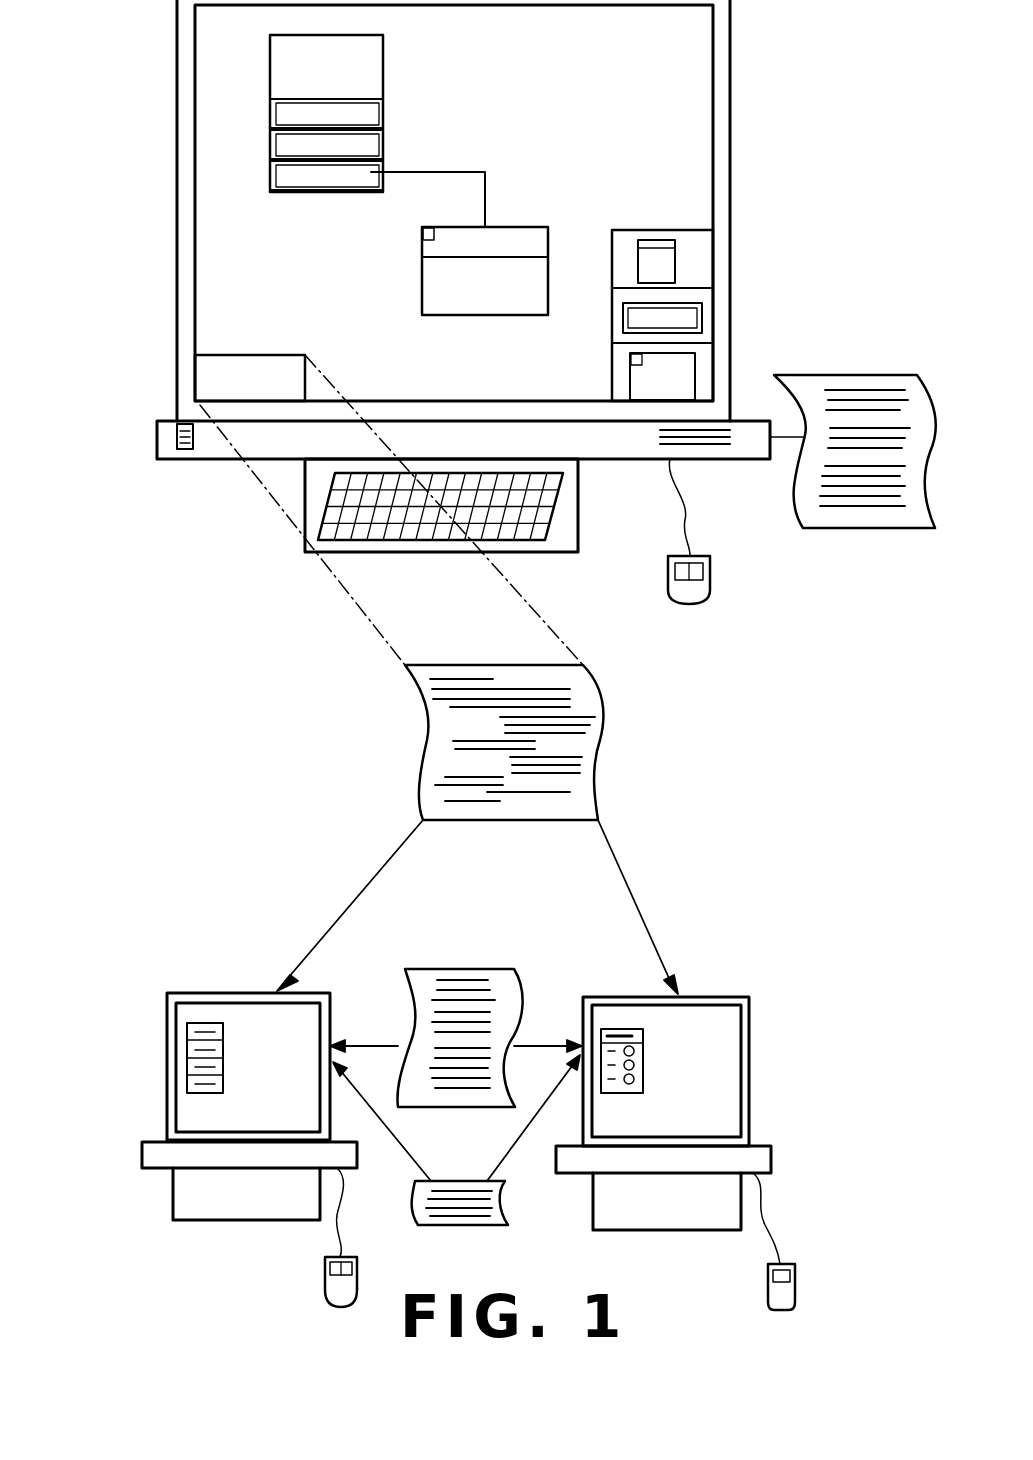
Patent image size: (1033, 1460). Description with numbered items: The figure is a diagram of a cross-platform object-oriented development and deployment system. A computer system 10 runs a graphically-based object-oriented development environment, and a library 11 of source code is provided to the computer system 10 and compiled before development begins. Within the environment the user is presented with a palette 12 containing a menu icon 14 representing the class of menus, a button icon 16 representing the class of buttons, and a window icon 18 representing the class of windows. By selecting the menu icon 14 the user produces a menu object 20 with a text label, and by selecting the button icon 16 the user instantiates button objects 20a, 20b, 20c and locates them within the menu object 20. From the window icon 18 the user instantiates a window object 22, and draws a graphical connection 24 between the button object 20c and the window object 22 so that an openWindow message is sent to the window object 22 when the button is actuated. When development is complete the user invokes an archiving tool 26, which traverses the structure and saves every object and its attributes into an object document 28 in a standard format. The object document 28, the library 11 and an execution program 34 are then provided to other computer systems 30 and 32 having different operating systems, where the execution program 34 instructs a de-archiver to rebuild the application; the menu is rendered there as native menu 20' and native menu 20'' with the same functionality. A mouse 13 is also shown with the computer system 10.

The computer system 10 is at (752, 150).
The library 11 is at (830, 375).
The palette 12 is at (670, 215).
The mouse 13 is at (705, 587).
The menu icon 14 is at (706, 263).
The button icon 16 is at (706, 313).
The window icon 18 is at (703, 368).
The menu object 20 is at (350, 100).
The button object 20a is at (378, 111).
The button object 20b is at (378, 145).
The button object 20c is at (372, 181).
The native menu 20' is at (241, 1057).
The native menu 20'' is at (660, 1058).
The window object 22 is at (430, 284).
The graphical connection 24 is at (490, 188).
The archiving tool 26 is at (248, 355).
The object document 28 is at (590, 738).
The computer system 30 is at (140, 1032).
The computer system 32 is at (762, 1026).
The execution program 34 is at (450, 1181).